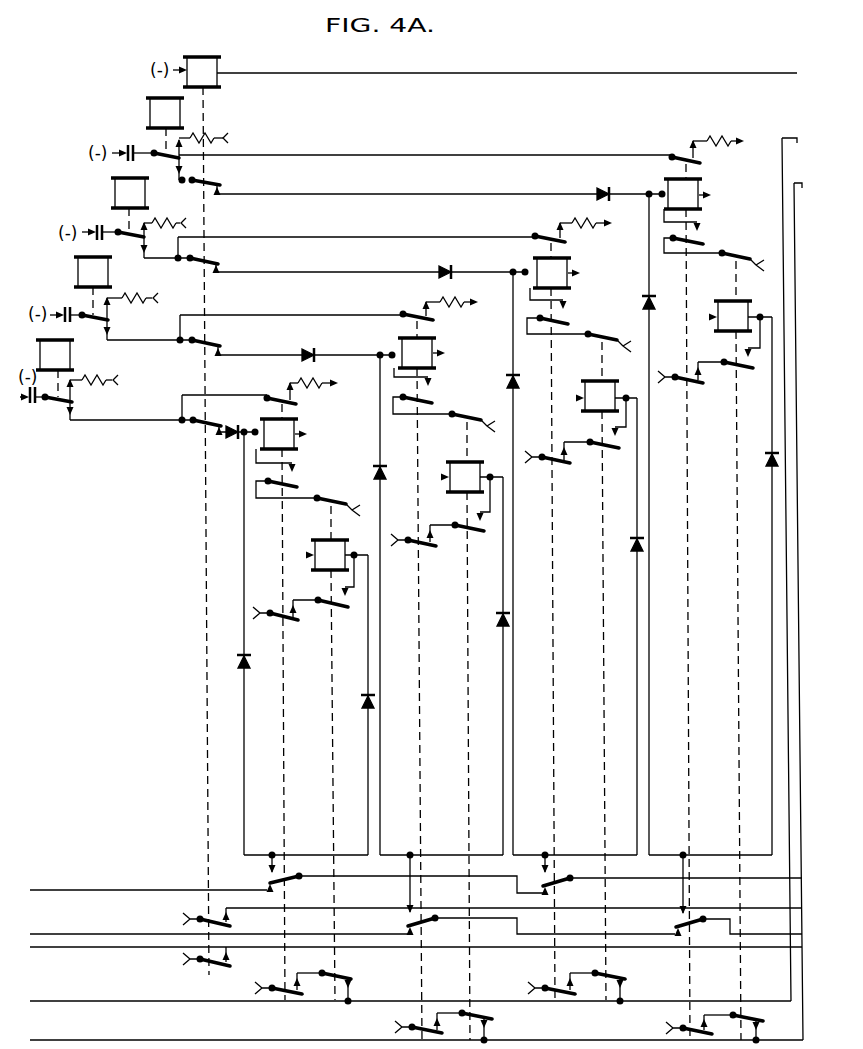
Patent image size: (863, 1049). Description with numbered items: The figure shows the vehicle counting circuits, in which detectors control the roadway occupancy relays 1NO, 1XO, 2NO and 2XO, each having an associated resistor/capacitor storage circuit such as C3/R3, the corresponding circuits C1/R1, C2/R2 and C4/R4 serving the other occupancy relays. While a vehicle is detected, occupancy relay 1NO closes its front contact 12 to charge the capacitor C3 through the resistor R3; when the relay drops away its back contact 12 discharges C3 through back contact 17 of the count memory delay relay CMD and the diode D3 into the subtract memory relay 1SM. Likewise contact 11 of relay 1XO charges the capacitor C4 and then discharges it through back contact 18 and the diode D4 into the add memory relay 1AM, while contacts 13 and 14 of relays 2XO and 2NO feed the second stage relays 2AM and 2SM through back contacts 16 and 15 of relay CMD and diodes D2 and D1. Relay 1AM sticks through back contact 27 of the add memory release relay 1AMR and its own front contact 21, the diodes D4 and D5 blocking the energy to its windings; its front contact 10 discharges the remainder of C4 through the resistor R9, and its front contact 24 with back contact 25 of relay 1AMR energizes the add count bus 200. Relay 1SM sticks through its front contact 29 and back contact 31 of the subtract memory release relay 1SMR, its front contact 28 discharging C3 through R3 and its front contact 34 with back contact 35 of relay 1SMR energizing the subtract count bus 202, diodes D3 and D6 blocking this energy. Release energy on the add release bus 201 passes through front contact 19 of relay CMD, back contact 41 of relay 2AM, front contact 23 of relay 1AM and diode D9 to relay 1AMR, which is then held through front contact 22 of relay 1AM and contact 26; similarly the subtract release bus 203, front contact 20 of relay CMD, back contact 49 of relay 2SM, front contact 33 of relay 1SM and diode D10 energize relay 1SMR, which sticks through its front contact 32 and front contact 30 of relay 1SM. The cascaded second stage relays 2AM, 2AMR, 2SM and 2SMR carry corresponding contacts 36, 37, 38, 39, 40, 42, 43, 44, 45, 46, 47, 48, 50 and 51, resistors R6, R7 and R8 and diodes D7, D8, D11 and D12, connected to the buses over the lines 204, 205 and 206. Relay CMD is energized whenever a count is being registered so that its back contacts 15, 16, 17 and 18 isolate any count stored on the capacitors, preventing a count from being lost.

The front contact 10 is at (276, 387).
The contact 11 is at (64, 406).
The contact 12 is at (94, 322).
The contact 13 is at (131, 242).
The contact 14 is at (165, 161).
The back contact 15 is at (214, 182).
The back contact 16 is at (211, 253).
The back contact 17 is at (212, 336).
The back contact 18 is at (213, 415).
The front contact 19 is at (214, 912).
The front contact 20 is at (193, 968).
The front contact 21 is at (297, 472).
The front contact 22 is at (280, 617).
The front contact 23 is at (294, 876).
The front contact 24 is at (266, 980).
The back contact 25 is at (330, 987).
The contact 26 is at (339, 615).
The back contact 27 is at (340, 511).
The front contact 28 is at (410, 301).
The front contact 29 is at (434, 388).
The front contact 30 is at (409, 543).
The back contact 31 is at (477, 427).
The front contact 32 is at (475, 540).
The front contact 33 is at (433, 902).
The front contact 34 is at (407, 1018).
The back contact 35 is at (492, 1023).
The contact 36 is at (541, 224).
The contact 37 is at (570, 309).
The contact 38 is at (619, 342).
The contact 39 is at (609, 459).
The contact 40 is at (549, 463).
The back contact 41 is at (568, 877).
The contact 42 is at (538, 979).
The contact 43 is at (604, 987).
The contact 44 is at (675, 143).
The contact 45 is at (702, 227).
The contact 46 is at (753, 247).
The contact 47 is at (741, 378).
The contact 48 is at (684, 392).
The contact 49 is at (701, 902).
The contact 50 is at (676, 1020).
The contact 51 is at (763, 1022).
The add count bus 200 is at (125, 1000).
The add release bus 201 is at (247, 889).
The subtract count bus 202 is at (792, 195).
The subtract release bus 203 is at (218, 912).
The release line 204 is at (375, 890).
The count line 205 is at (350, 948).
The command line 206 is at (760, 73).
The count memory delay relay CMD is at (205, 504).
The roadway occupancy relay 2NO is at (158, 108).
The roadway occupancy relay 2XO is at (118, 186).
The roadway occupancy relay 1NO is at (80, 268).
The roadway occupancy relay 1XO is at (72, 356).
The add memory relay 1AM is at (293, 429).
The add memory release relay 1AMR is at (332, 753).
The subtract memory relay 1SM is at (433, 345).
The subtract memory release relay 1SMR is at (450, 731).
The add count memory relay 2AM is at (538, 264).
The add memory release relay 2AMR is at (586, 671).
The subtract memory relay 2SM is at (697, 184).
The memory release relay 2SMR is at (720, 650).
The capacitor C1 is at (129, 144).
The capacitor C2 is at (97, 224).
The capacitor C3 is at (64, 307).
The capacitor C4 is at (33, 405).
The resistor R1 is at (205, 134).
The resistor R2 is at (178, 210).
The resistor R3 is at (137, 296).
The resistor R4 is at (107, 389).
The resistor R6 is at (722, 137).
The resistor R7 is at (597, 233).
The resistor R8 is at (462, 294).
The resistor R9 is at (325, 374).
The diode D1 is at (606, 181).
The diode D2 is at (447, 262).
The diode D3 is at (314, 343).
The diode D4 is at (226, 449).
The diode D5 is at (250, 668).
The diode D6 is at (383, 467).
The diode D7 is at (525, 563).
The diode D8 is at (660, 524).
The diode D9 is at (364, 708).
The diode D10 is at (499, 627).
The diode D11 is at (633, 551).
The diode D12 is at (768, 467).